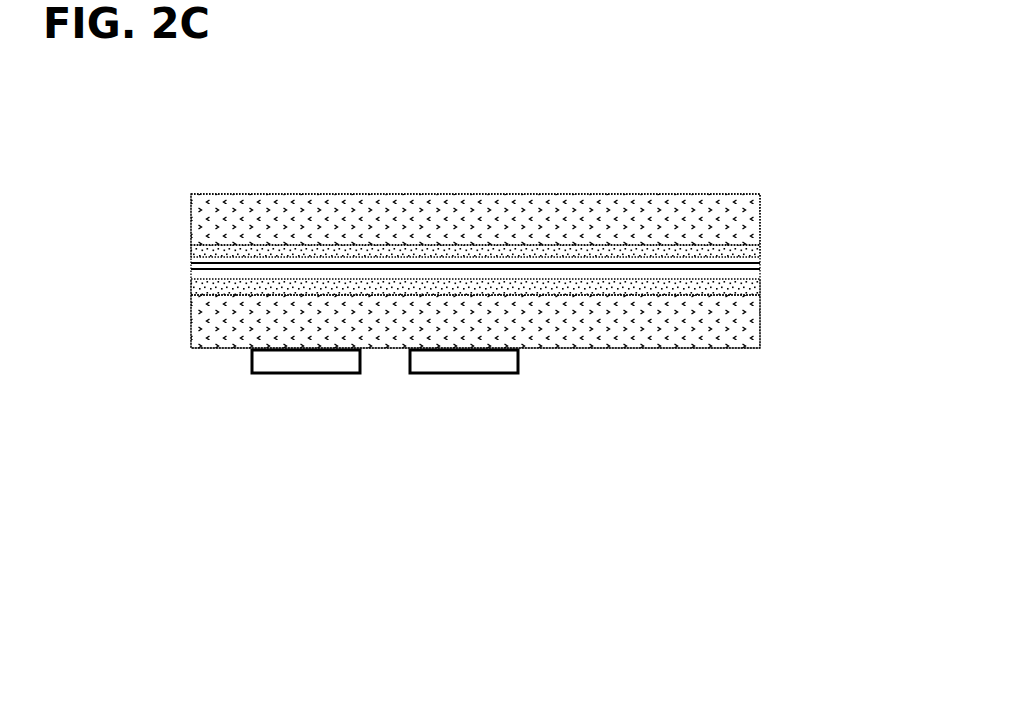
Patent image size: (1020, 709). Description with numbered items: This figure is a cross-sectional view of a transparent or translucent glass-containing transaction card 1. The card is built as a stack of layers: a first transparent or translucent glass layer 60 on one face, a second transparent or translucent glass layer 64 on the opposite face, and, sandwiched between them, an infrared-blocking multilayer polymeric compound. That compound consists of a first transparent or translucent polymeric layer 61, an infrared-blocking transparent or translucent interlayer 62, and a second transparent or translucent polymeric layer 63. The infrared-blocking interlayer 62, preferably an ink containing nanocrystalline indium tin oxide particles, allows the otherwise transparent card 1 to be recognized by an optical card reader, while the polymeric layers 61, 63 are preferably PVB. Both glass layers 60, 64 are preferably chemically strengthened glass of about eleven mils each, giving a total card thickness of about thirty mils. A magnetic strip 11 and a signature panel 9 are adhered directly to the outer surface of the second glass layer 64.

The transaction card 1 is at (472, 171).
The first transparent or translucent glass layer 60 is at (760, 222).
The first transparent or translucent polymeric layer 61 is at (190, 256).
The infrared-blocking transparent or translucent interlayer 62 is at (760, 270).
The second transparent or translucent polymeric layer 63 is at (190, 290).
The second transparent or translucent glass layer 64 is at (760, 337).
The magnetic strip 11 is at (312, 373).
The signature panel 9 is at (465, 373).